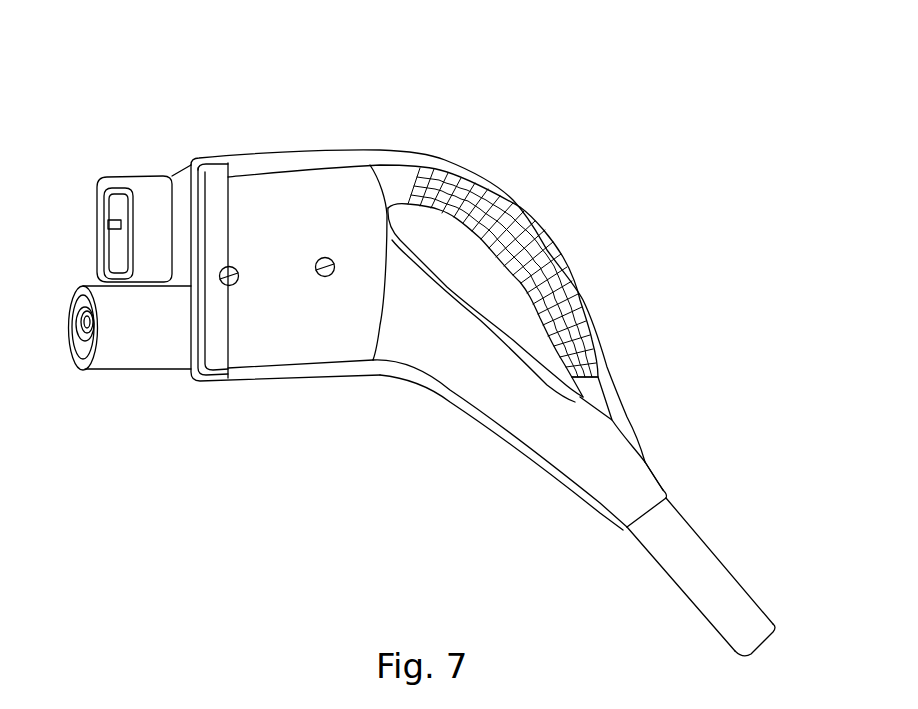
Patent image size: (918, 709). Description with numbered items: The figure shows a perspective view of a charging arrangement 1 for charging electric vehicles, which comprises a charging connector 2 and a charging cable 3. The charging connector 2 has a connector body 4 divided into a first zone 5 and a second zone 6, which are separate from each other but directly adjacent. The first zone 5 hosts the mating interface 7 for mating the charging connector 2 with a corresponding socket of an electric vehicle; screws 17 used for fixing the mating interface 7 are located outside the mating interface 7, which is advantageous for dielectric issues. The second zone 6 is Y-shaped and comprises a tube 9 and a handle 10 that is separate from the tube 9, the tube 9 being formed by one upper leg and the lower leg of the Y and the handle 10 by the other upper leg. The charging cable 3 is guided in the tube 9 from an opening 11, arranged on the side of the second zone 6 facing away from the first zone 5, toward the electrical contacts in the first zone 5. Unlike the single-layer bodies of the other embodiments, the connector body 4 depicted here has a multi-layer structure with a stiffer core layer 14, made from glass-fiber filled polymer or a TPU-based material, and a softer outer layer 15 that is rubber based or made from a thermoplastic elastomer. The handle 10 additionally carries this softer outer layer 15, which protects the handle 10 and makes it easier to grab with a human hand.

The charging arrangement 1 is at (694, 250).
The charging connector 2 is at (380, 440).
The charging cable 3 is at (757, 598).
The connector body 4 is at (392, 113).
The first zone 5 is at (276, 348).
The second zone 6 is at (604, 441).
The mating interface 7 is at (147, 353).
The tube 9 is at (500, 405).
The handle 10 is at (513, 202).
The opening 11 is at (627, 528).
The stiffer core layer 14 is at (337, 217).
The softer outer layer 15 is at (556, 252).
The screws 17 is at (319, 257).